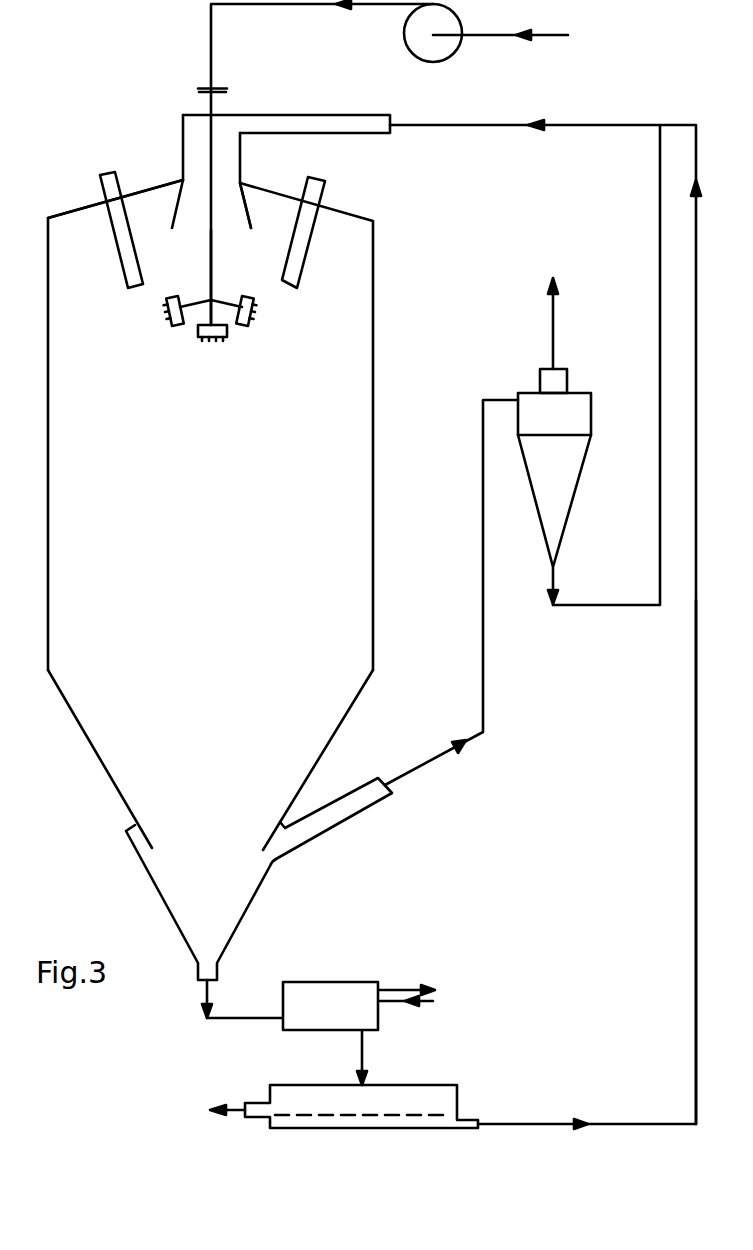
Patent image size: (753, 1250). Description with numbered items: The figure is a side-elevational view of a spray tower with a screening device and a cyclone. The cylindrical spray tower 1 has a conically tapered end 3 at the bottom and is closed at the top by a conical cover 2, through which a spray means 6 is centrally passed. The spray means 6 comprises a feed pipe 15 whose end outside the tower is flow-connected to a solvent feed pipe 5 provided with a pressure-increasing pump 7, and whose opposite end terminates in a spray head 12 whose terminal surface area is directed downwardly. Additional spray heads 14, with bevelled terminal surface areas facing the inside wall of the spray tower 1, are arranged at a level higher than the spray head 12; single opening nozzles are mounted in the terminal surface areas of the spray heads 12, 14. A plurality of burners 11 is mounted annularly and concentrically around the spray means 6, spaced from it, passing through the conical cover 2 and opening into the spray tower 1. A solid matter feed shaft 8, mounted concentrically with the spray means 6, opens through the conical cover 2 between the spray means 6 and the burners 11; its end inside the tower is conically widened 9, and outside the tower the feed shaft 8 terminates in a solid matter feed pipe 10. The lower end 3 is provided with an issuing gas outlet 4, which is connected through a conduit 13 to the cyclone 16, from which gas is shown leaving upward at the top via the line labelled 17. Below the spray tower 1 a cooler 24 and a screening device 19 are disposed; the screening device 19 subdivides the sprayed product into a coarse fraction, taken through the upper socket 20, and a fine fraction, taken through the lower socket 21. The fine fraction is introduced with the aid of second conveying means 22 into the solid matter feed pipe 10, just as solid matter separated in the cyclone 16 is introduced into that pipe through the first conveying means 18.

The spray tower 1 is at (375, 430).
The conical cover 2 is at (60, 213).
The conically tapered end 3 is at (100, 767).
The issuing gas outlet 4 is at (358, 817).
The solvent feed pipe 5 is at (562, 52).
The spray means 6 is at (250, 333).
The pressure-increasing pump 7 is at (455, 53).
The solid matter feed shaft 8 is at (241, 165).
The conically widened end 9 is at (248, 215).
The solid matter feed pipe 10 is at (361, 115).
The burners 11 is at (322, 270).
The spray head 12 is at (226, 339).
The conduit 13 is at (482, 598).
The additional spray heads 14 is at (175, 329).
The feed pipe 15 is at (213, 268).
The cyclone 16 is at (592, 432).
The exhaust outlet 17 is at (555, 335).
The first conveying means 18 is at (659, 163).
The screening device 19 is at (440, 1085).
The upper socket 20 is at (253, 1103).
The lower socket 21 is at (470, 1120).
The second conveying means 22 is at (695, 838).
The cooler 24 is at (352, 982).